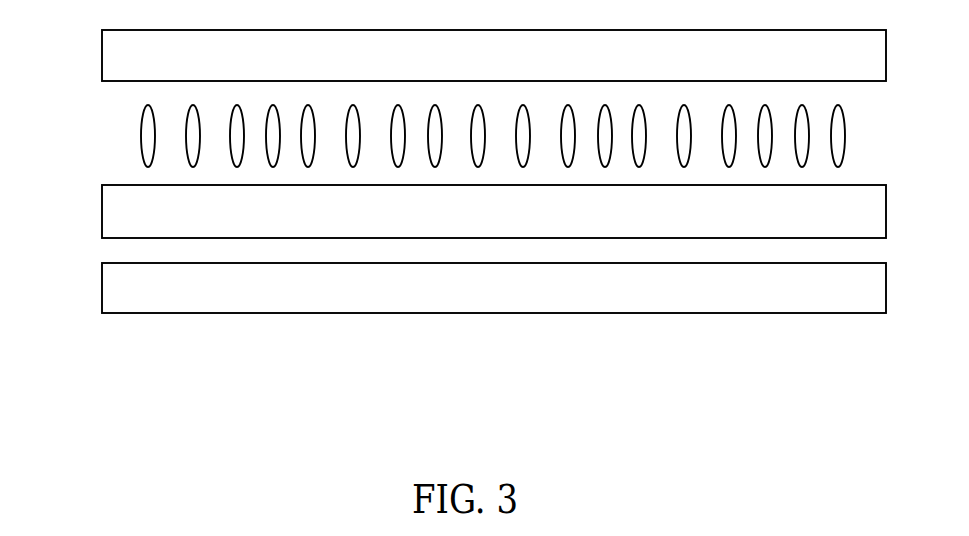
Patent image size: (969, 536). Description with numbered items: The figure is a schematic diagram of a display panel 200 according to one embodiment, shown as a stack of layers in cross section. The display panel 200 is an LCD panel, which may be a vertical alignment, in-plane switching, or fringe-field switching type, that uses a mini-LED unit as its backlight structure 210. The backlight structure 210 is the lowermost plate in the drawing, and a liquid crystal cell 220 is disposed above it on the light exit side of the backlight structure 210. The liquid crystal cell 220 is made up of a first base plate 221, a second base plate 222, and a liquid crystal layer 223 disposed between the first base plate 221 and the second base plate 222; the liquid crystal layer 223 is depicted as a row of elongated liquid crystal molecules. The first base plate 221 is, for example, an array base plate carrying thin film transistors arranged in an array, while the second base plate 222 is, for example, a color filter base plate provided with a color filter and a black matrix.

The display panel 200 is at (489, 450).
The backlight structure 210 is at (209, 293).
The liquid crystal cell 220 is at (874, 150).
The first base plate 221 is at (118, 222).
The second base plate 222 is at (128, 61).
The liquid crystal layer 223 is at (140, 128).